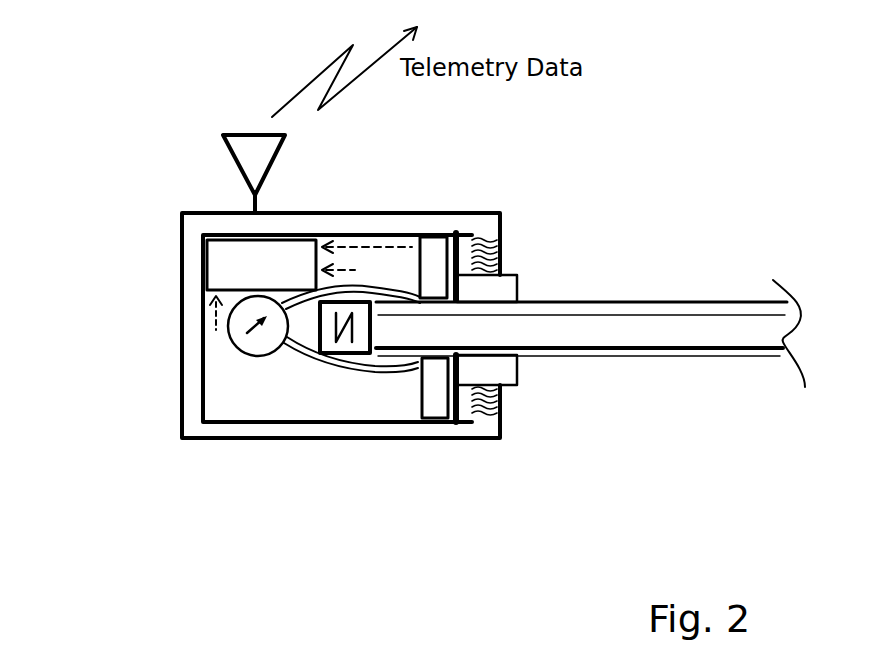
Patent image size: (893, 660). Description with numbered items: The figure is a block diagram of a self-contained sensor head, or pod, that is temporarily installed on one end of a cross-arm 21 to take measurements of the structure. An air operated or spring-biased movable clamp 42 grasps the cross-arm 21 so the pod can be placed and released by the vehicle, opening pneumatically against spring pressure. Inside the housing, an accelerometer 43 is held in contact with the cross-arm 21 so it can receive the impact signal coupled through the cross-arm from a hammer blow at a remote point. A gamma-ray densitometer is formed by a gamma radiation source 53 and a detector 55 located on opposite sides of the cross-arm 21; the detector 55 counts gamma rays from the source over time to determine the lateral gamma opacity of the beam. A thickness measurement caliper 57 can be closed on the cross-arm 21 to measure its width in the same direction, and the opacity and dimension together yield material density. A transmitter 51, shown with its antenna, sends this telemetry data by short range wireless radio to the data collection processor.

The transmitter 51 is at (227, 263).
The gamma detector 55 is at (435, 260).
The movable clamp 42 is at (490, 298).
The cross-arm 21 is at (590, 342).
The thickness measurement caliper 57 is at (252, 350).
The accelerometer 43 is at (360, 352).
The gamma radiation source 53 is at (432, 403).